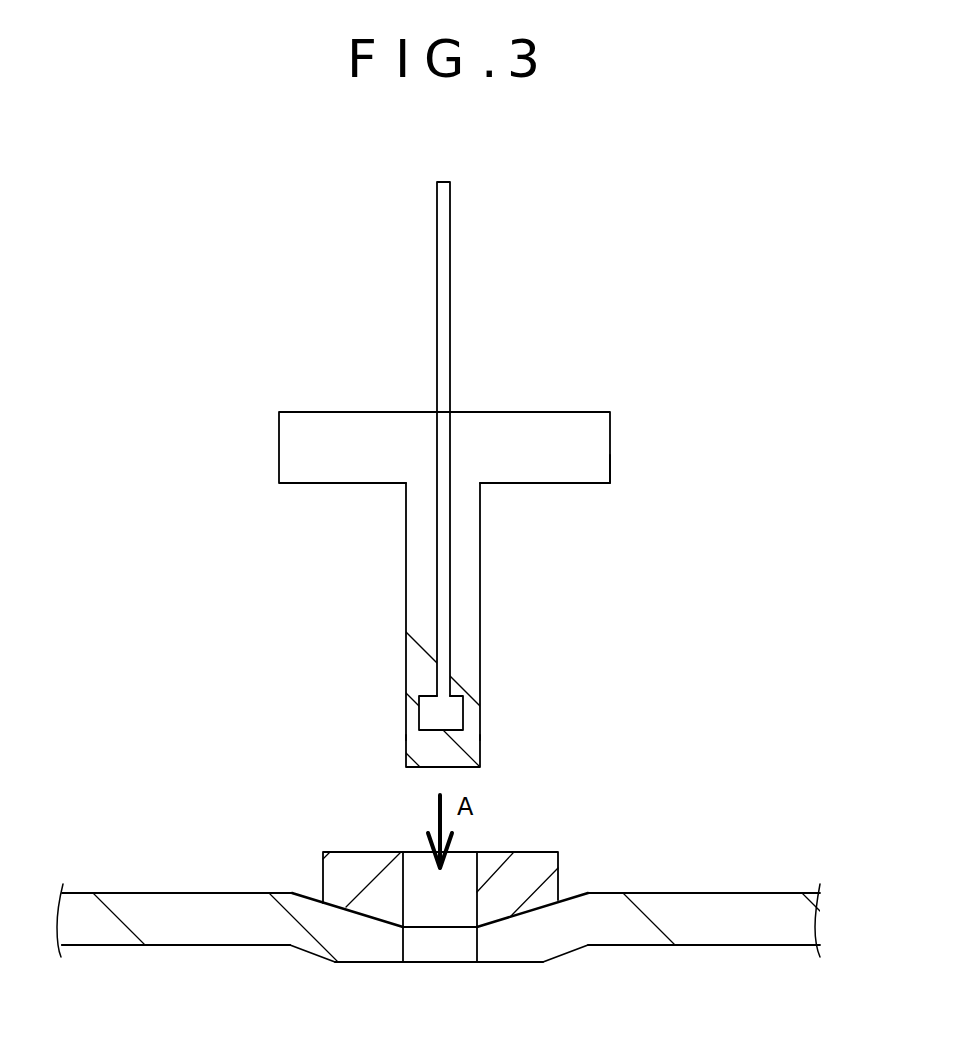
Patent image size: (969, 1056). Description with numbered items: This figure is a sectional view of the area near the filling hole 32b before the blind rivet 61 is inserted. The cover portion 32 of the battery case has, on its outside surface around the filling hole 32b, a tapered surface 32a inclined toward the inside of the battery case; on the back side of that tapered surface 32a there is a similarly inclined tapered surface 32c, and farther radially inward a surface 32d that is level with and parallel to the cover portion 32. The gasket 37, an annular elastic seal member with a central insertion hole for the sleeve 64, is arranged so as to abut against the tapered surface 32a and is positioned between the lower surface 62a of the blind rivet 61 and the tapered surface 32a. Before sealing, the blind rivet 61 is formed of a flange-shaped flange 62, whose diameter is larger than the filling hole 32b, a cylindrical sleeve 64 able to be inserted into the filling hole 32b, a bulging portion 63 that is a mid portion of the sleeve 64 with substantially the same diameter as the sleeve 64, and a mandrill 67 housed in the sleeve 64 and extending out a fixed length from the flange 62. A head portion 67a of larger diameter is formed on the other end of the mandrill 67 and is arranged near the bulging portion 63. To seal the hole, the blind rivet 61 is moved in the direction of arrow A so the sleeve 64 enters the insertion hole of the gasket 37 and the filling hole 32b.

The blind rivet 61 is at (270, 397).
The flange 62 is at (547, 443).
The lower surface 62a is at (587, 483).
The bulging portion 63 is at (463, 687).
The sleeve 64 is at (467, 560).
The mandrill 67 is at (443, 285).
The head portion 67a is at (433, 706).
The cover portion 32 is at (169, 920).
The tapered surface 32a is at (303, 893).
The filling hole 32b is at (407, 957).
The tapered surface 32c is at (307, 953).
The surface 32d is at (373, 962).
The gasket 37 is at (537, 878).